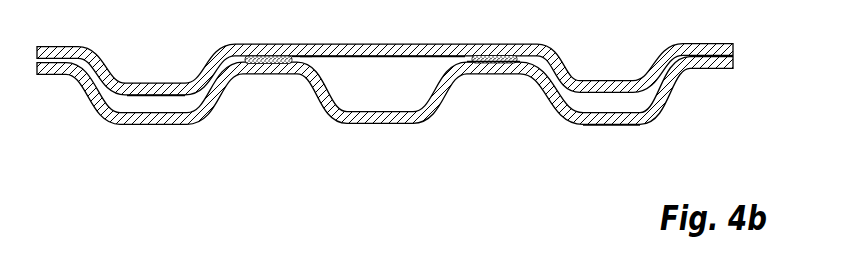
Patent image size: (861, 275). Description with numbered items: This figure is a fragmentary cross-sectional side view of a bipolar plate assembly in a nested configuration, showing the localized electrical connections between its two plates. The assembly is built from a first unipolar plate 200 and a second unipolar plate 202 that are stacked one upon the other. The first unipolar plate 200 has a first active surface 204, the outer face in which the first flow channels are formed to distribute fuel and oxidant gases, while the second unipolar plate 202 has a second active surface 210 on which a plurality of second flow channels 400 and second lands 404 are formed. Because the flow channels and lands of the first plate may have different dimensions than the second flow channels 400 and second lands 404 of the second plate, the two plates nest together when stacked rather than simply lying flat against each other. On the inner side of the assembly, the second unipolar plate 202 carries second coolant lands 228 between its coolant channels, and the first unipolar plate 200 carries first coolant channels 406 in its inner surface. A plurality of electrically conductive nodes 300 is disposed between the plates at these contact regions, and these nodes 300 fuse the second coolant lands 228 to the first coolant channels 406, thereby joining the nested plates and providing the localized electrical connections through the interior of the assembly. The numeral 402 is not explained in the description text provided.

The first unipolar plate 200 is at (716, 47).
The second unipolar plate 202 is at (717, 64).
The first active surface 204 is at (424, 99).
The second active surface 210 is at (424, 125).
The second coolant lands 228 is at (298, 62).
The conductive nodes 300 is at (263, 64).
The second flow channels 400 is at (517, 68).
The first recess 402 is at (155, 95).
The second lands 404 is at (633, 125).
The first coolant channels 406 is at (403, 57).